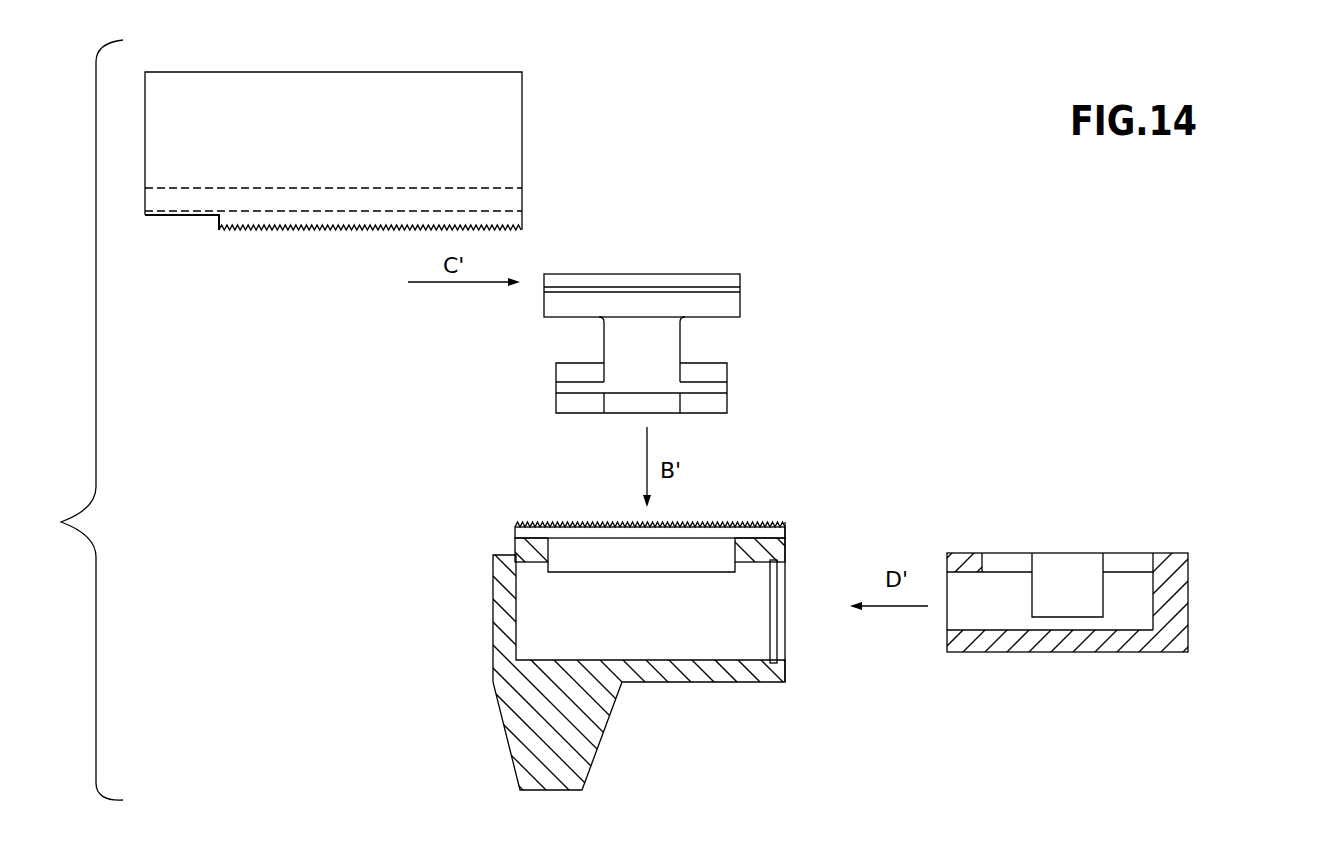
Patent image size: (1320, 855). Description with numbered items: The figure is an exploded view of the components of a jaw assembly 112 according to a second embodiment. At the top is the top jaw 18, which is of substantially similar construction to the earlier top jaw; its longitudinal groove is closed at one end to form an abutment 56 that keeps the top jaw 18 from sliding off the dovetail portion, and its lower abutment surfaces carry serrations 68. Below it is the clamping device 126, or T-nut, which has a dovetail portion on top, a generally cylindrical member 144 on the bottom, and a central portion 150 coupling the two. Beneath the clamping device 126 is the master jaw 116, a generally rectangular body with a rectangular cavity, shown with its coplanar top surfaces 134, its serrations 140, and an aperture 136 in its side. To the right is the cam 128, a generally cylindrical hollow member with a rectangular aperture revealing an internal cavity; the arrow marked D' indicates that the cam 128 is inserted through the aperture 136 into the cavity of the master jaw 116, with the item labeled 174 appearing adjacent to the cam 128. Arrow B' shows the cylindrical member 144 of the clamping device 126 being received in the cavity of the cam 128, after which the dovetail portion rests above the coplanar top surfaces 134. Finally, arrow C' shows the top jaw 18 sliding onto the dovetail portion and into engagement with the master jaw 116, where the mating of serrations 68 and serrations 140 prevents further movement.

The top jaw 18 is at (333, 175).
The abutment 56 is at (182, 216).
The serrations 68 is at (351, 243).
The jaw assembly 112 is at (691, 309).
The clamping device 126 is at (740, 305).
The central portion 150 is at (680, 333).
The cylindrical member 144 is at (727, 400).
The coplanar top surfaces 134 is at (524, 509).
The serrations 140 is at (647, 504).
The aperture 136 is at (780, 640).
The master jaw 116 is at (507, 738).
The cam 128 is at (1173, 553).
The channel assembly 174 is at (1062, 600).